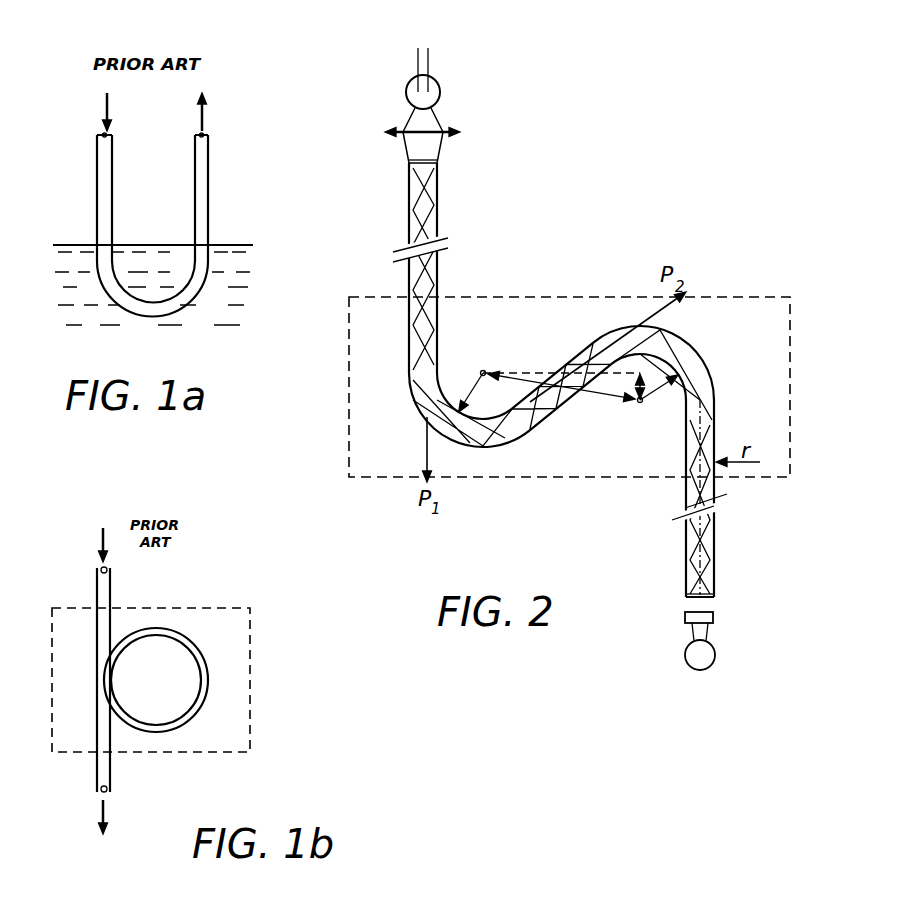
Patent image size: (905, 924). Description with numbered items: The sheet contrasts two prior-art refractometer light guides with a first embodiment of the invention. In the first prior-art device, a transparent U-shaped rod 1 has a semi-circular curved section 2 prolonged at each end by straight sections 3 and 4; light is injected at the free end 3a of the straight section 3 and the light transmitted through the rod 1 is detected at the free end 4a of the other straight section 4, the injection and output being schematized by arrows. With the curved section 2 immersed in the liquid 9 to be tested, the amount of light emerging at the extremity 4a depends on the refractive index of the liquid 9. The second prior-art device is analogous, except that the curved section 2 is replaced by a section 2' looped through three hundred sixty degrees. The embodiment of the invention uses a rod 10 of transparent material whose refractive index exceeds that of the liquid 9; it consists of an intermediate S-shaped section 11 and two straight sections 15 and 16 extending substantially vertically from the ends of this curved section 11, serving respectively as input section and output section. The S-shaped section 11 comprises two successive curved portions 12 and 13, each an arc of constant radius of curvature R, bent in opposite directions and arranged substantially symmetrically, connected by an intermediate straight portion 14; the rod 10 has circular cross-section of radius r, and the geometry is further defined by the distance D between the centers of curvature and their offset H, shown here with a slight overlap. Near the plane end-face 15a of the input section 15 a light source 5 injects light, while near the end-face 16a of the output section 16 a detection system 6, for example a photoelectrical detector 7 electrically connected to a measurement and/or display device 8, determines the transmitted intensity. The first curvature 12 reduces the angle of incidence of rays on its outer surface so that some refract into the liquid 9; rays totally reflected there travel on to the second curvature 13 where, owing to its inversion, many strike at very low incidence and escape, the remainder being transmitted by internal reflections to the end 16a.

In FIG. 1a, the transparent U-shaped rod 1 is at (160, 228).
In FIG. 1a, the curved section 2 is at (152, 308).
In FIG. 1b, the looped section 2' is at (195, 680).
In FIG. 1a, the straight section 3 is at (97, 194).
In FIG. 1b, the straight section 3 is at (112, 583).
In FIG. 1a, the free end 3a is at (100, 132).
In FIG. 1a, the straight section 4 is at (205, 186).
In FIG. 1b, the straight section 4 is at (112, 778).
In FIG. 1a, the free end 4a is at (205, 132).
In FIG. 1a, the liquid 9 is at (148, 258).
In FIG. 1b, the liquid 9 is at (217, 616).
In FIG. 2, the liquid 9 is at (558, 305).
In FIG. 2, the light source 5 is at (455, 103).
In FIG. 2, the detection system 6 is at (691, 637).
In FIG. 2, the photoelectrical detector 7 is at (713, 616).
In FIG. 2, the measurement and/or display device 8 is at (715, 656).
In FIG. 2, the rod 10 is at (450, 212).
In FIG. 2, the S-shaped section 11 is at (566, 386).
In FIG. 2, the first curved portion 12 is at (486, 447).
In FIG. 2, the second curved portion 13 is at (697, 350).
In FIG. 2, the intermediate straight portion 14 is at (555, 414).
In FIG. 2, the input section 15 is at (440, 291).
In FIG. 2, the plane end-face 15a is at (425, 161).
In FIG. 2, the output section 16 is at (685, 492).
In FIG. 2, the end-face 16a is at (686, 597).